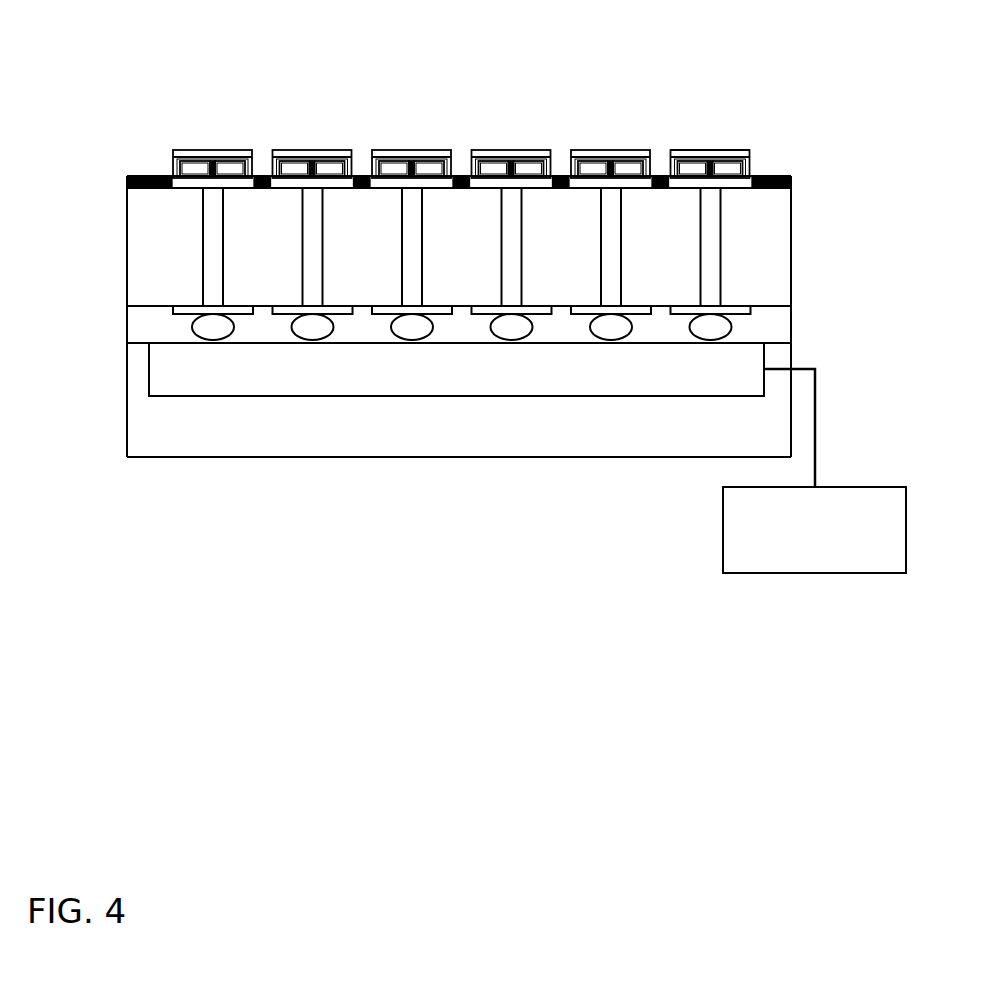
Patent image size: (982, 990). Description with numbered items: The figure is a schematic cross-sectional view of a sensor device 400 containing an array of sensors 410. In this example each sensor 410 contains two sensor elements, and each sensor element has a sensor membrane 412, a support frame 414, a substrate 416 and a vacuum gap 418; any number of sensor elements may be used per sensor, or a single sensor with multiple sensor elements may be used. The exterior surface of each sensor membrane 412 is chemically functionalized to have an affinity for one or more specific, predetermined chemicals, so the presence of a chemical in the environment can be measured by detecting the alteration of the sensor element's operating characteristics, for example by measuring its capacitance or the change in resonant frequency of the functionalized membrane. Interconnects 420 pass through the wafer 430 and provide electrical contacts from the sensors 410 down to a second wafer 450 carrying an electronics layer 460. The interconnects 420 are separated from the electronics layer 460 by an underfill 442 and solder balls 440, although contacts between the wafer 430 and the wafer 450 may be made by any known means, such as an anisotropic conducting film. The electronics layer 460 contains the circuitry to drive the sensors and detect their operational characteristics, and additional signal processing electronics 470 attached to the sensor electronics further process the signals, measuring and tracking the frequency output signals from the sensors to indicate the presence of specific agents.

The sensor device 400 is at (140, 684).
The sensor 410 is at (537, 124).
The sensor membrane 412 is at (700, 152).
The support frame 414 is at (764, 165).
The substrate 416 is at (723, 182).
The vacuum gap 418 is at (733, 172).
The interconnects 420 is at (189, 223).
The wafer 430 is at (792, 262).
The solder balls 440 is at (207, 327).
The underfill 442 is at (792, 323).
The wafer 450 is at (407, 446).
The electronics layer 460 is at (410, 388).
The signal processing electronics 470 is at (832, 538).